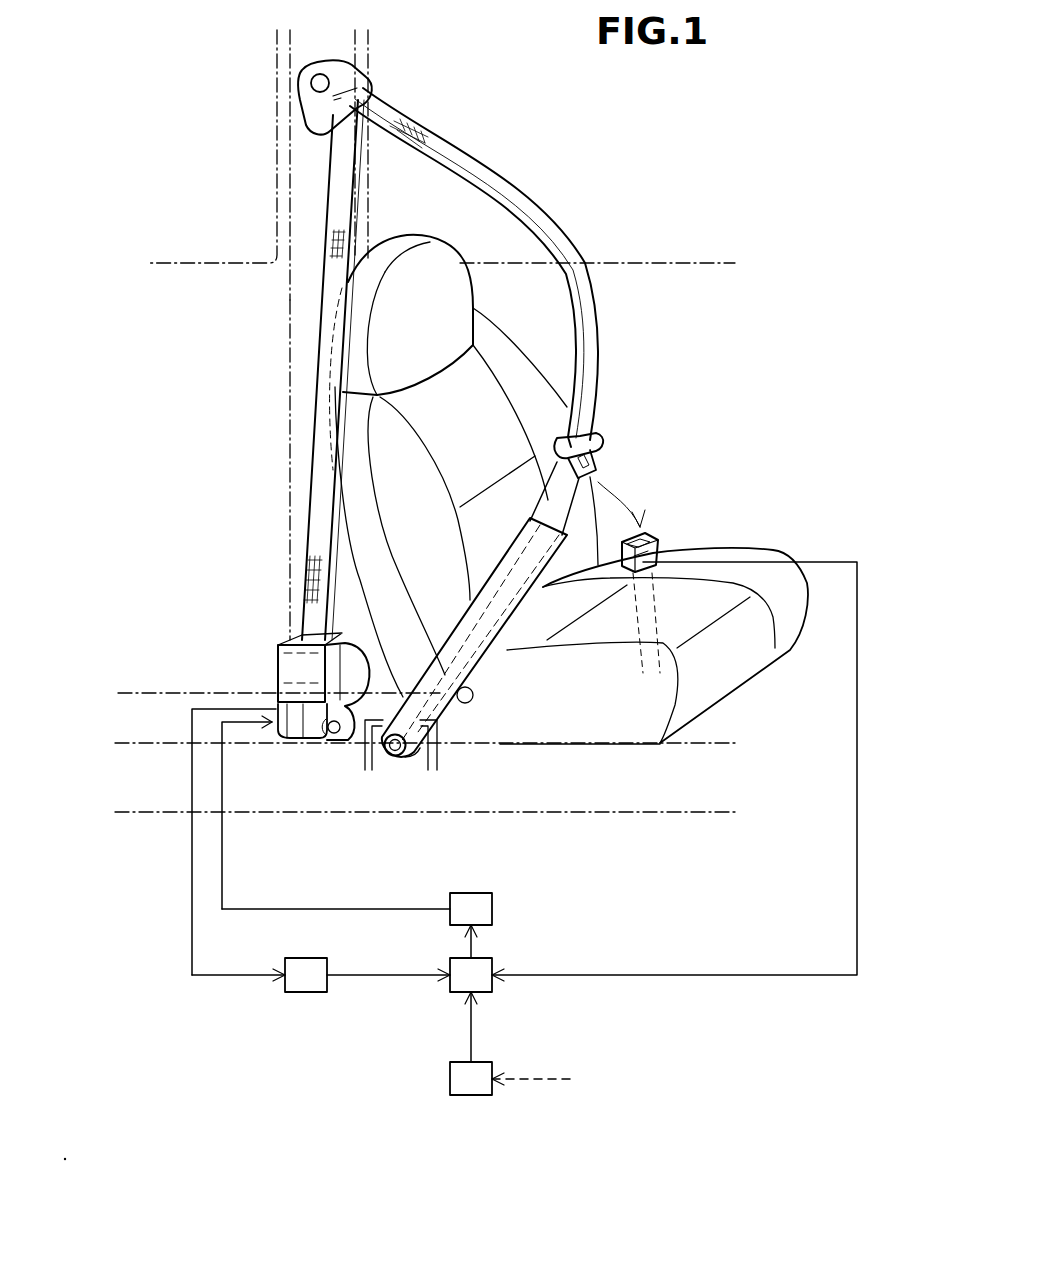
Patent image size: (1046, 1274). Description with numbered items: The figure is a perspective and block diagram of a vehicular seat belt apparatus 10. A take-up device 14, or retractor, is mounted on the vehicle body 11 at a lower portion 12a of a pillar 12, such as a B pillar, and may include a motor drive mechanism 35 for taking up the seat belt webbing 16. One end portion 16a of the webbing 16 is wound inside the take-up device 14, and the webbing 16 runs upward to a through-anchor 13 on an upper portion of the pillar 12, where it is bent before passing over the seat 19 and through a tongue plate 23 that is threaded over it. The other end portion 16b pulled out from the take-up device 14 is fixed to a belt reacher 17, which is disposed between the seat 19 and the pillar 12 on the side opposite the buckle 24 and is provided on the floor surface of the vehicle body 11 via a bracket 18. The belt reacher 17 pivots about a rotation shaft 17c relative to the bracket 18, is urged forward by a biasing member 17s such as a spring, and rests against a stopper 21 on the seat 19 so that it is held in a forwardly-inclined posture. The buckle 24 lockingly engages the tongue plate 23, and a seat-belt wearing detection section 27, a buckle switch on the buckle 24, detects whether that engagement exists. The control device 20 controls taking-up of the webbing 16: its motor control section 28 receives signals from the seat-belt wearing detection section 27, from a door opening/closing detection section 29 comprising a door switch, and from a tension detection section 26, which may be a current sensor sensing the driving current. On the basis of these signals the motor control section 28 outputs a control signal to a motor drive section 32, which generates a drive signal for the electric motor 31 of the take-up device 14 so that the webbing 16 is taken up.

The seat belt apparatus 10 is at (562, 210).
The vehicle body 11 is at (372, 56).
The pillar 12 is at (305, 143).
The lower portion of pillar 12a is at (290, 615).
The through-anchor 13 is at (372, 88).
The take-up device 14 is at (250, 672).
The seat belt webbing 16 is at (592, 333).
The one end portion of webbing 16a is at (310, 625).
The other end portion of webbing 16b is at (548, 516).
The belt reacher 17 is at (408, 737).
The rotation shaft 17c is at (396, 756).
The biasing member 17s is at (420, 754).
The bracket 18 is at (373, 770).
The seat 19 is at (797, 597).
The control device 20 is at (155, 908).
The stopper 21 is at (474, 694).
The tongue plate 23 is at (600, 448).
The buckle 24 is at (656, 550).
The tension detection section 26 is at (306, 985).
The seat-belt wearing detection section 27 is at (641, 546).
The motor control section 28 is at (487, 985).
The door opening/closing detection section 29 is at (472, 1096).
The electric motor 31 is at (297, 733).
The motor drive section 32 is at (482, 908).
The motor drive mechanism 35 is at (345, 740).